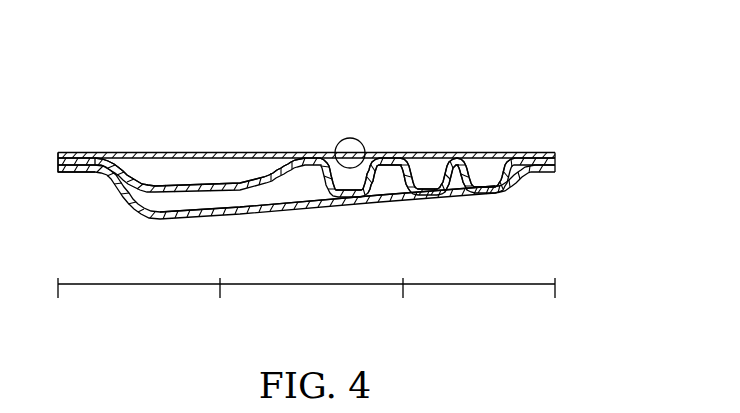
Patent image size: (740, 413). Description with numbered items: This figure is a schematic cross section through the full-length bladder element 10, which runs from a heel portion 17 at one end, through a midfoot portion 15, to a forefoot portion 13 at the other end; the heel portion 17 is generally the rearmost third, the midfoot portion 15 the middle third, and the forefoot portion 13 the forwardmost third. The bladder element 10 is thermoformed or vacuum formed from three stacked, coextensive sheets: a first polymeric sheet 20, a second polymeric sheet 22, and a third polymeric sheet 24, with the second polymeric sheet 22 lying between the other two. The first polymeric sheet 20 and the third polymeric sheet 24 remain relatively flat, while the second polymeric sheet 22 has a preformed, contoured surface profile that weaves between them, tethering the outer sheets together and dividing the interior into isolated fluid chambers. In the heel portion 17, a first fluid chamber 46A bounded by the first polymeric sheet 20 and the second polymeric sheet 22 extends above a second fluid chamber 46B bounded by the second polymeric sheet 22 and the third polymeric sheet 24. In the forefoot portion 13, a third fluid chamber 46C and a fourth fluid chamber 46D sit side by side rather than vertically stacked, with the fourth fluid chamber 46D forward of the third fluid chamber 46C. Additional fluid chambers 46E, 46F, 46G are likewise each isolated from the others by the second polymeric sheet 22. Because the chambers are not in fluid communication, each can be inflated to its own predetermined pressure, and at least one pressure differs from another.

The bladder element 10 is at (552, 66).
The forefoot portion 13 is at (495, 286).
The midfoot portion 15 is at (328, 286).
The heel portion 17 is at (147, 286).
The first polymeric sheet 20 is at (96, 158).
The second polymeric sheet 22 is at (150, 187).
The third polymeric sheet 24 is at (168, 212).
The first fluid chamber 46A is at (258, 168).
The second fluid chamber 46B is at (229, 203).
The third fluid chamber 46C is at (432, 168).
The fourth fluid chamber 46D is at (467, 178).
The additional fluid chamber 46E is at (353, 178).
The additional fluid chamber 46F is at (395, 180).
The additional fluid chamber 46G is at (497, 168).